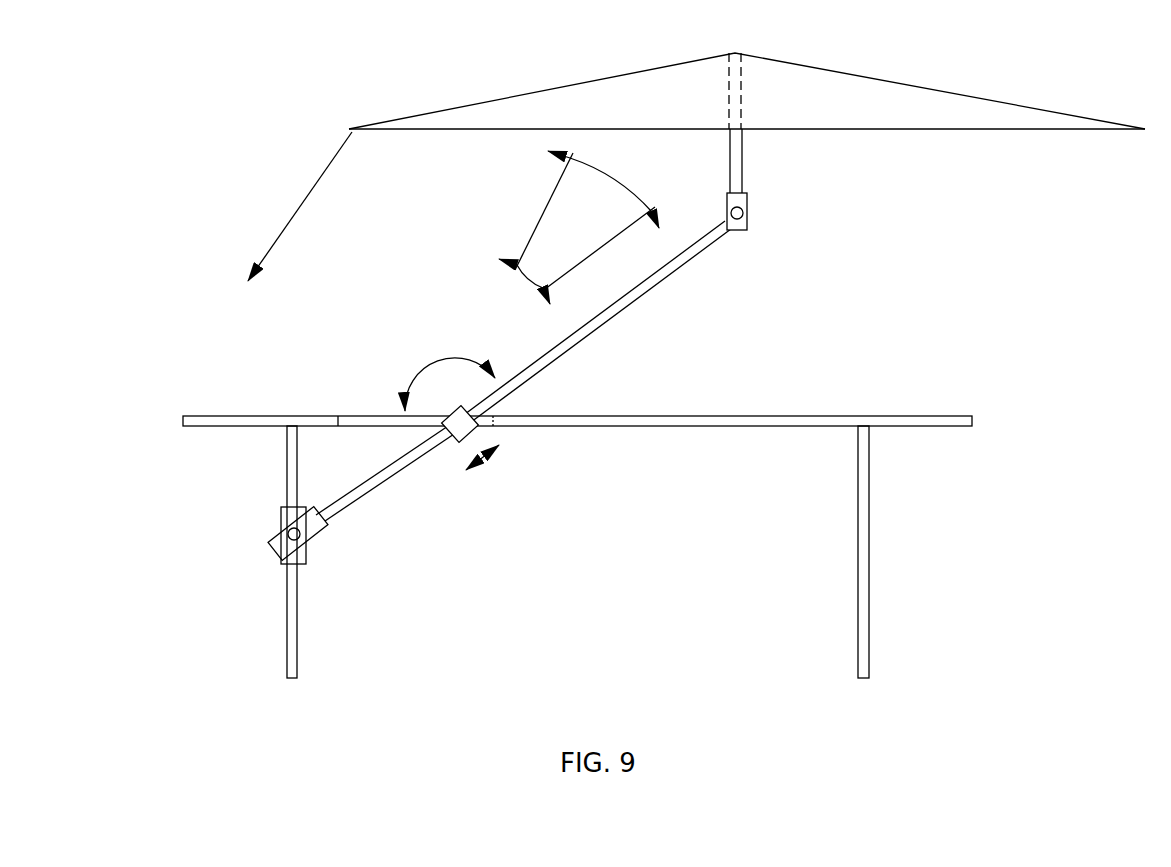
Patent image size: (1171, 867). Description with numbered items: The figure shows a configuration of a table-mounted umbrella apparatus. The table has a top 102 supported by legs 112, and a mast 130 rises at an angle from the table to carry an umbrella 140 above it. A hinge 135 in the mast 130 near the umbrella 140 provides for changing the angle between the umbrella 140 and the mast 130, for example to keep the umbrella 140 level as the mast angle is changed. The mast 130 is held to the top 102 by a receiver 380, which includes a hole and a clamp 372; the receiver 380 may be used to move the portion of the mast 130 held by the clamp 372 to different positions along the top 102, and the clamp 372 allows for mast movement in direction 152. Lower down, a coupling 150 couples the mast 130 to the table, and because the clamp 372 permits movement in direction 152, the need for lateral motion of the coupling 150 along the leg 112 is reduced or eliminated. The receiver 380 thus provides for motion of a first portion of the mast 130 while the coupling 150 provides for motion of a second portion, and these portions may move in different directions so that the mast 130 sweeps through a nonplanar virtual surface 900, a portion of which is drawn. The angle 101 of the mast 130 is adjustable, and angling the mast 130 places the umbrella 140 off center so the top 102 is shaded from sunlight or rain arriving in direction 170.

The umbrella 140 is at (891, 82).
The hinge 135 is at (764, 211).
The mast 130 is at (640, 300).
The direction 170 is at (314, 206).
The virtual surface 900 is at (596, 236).
The receiver 380 is at (356, 409).
The angle 101 is at (450, 371).
The top 102 is at (278, 415).
The leg 112 is at (280, 512).
The coupling 150 is at (326, 556).
The clamp 372 is at (455, 438).
The direction 152 is at (497, 466).